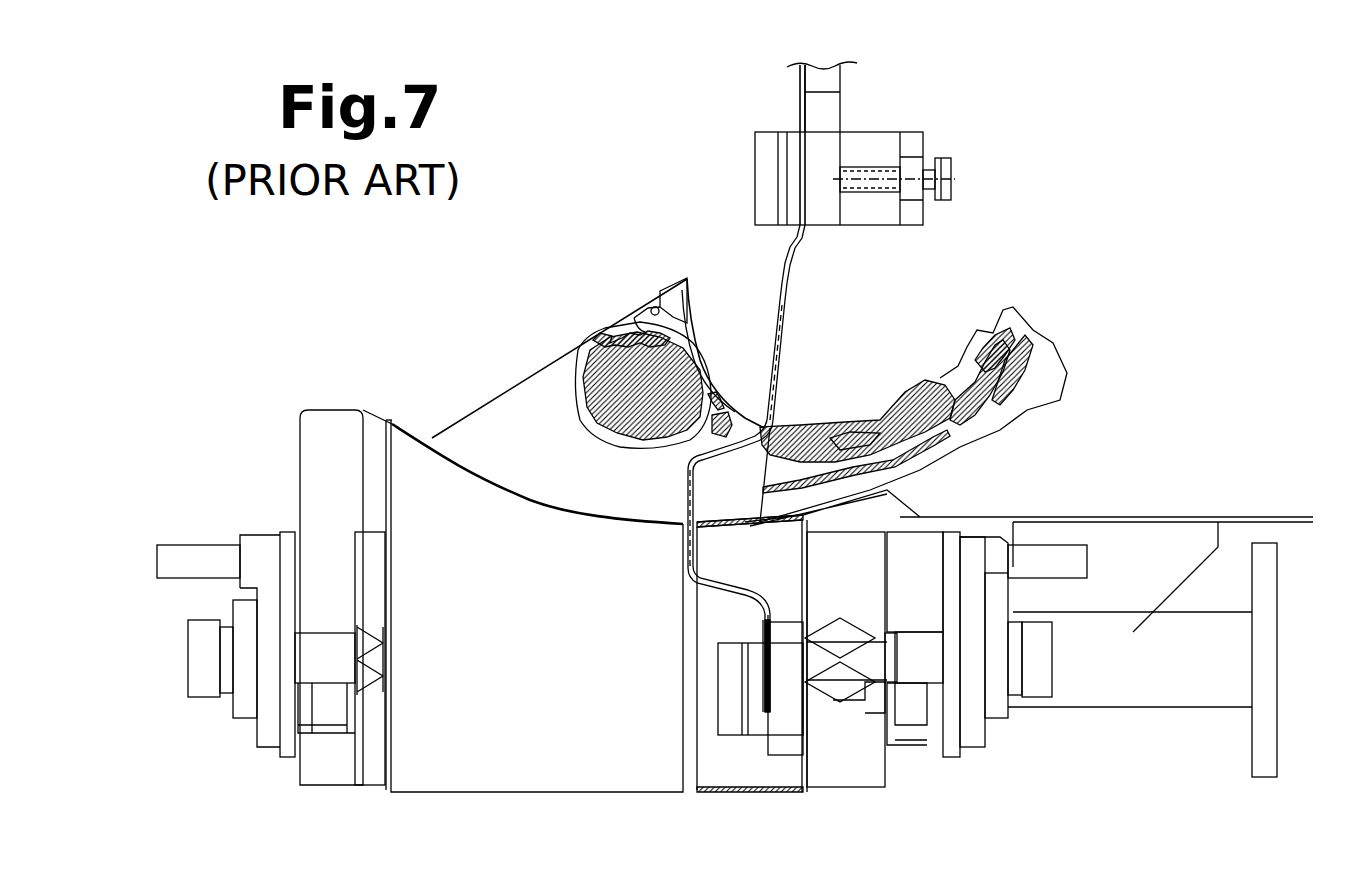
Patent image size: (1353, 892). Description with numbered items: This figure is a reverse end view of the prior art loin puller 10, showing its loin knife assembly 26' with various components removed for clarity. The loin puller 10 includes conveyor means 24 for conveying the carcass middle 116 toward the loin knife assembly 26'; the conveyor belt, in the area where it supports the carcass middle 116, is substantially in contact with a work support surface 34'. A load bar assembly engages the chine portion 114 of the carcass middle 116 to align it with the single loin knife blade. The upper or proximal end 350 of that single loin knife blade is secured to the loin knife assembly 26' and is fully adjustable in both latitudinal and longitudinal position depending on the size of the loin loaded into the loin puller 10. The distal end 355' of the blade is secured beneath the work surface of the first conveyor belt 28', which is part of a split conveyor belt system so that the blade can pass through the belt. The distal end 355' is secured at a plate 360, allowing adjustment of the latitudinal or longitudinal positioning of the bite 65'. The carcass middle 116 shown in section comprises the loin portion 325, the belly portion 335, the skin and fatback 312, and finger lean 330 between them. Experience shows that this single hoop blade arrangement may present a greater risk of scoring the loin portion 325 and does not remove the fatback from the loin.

The loin puller 10 is at (637, 143).
The conveyor means 24 is at (322, 788).
The loin knife assembly 26' is at (886, 143).
The first belt 28' is at (534, 581).
The work support surface 34' is at (346, 565).
The bite 65' is at (819, 571).
The chine portion 114 is at (690, 292).
The carcass middle 116 is at (571, 342).
The skin and fatback 312 is at (543, 410).
The loin portion 325 is at (633, 313).
The finger lean 330 is at (757, 417).
The belly portion 335 is at (893, 400).
The upper or proximal end 350 is at (801, 121).
The distal end 355' is at (738, 697).
The plate 360 is at (740, 660).